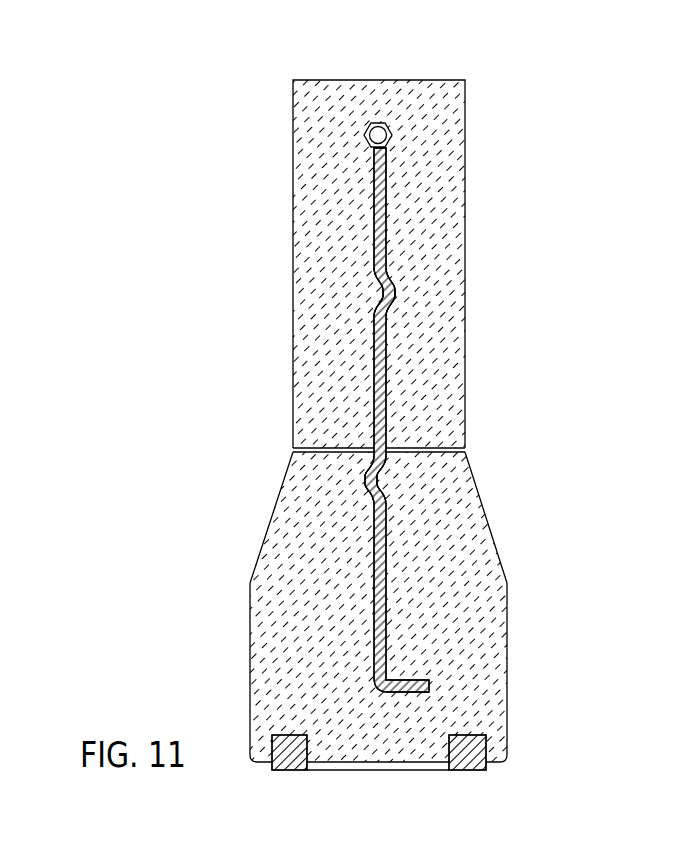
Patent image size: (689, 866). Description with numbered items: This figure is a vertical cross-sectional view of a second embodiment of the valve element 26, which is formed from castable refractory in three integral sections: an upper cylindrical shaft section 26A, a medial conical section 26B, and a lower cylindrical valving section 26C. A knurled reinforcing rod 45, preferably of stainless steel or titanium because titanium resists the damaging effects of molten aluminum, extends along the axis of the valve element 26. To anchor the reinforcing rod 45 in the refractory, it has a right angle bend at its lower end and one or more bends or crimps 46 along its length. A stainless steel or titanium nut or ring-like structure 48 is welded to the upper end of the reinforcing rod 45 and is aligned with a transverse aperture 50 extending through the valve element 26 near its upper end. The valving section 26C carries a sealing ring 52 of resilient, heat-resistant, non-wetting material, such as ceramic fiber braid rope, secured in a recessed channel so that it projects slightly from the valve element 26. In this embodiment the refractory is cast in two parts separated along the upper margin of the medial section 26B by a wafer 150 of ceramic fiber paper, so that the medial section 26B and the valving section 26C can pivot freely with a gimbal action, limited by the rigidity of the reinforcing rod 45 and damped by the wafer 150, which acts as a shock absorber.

The valve element 26 is at (210, 188).
The upper cylindrical shaft section 26A is at (443, 256).
The medial conical section 26B is at (481, 540).
The lower cylindrical valving section 26C is at (268, 651).
The knurled reinforcing rod 45 is at (374, 378).
The bends or crimps 46 is at (381, 298).
The nut or ring-like structure 48 is at (392, 133).
The transverse aperture 50 is at (379, 121).
The sealing ring 52 is at (295, 762).
The wafer 150 is at (447, 450).